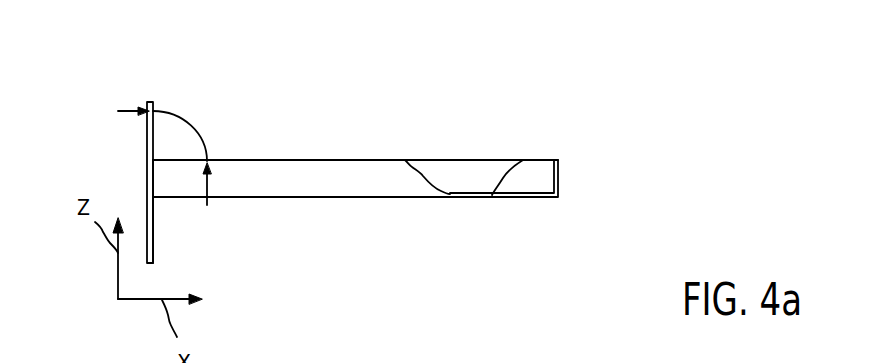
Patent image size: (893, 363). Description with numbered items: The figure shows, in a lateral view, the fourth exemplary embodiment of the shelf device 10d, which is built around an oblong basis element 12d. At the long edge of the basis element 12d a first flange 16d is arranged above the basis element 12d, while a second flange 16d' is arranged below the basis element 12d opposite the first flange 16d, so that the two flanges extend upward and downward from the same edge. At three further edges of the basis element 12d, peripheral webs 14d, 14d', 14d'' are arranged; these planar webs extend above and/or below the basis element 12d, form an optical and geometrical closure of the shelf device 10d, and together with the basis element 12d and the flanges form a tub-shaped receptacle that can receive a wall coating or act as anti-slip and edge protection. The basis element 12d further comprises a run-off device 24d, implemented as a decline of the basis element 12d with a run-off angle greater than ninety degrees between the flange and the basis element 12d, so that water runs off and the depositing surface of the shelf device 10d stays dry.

The shelf device 10d is at (122, 62).
The first flange 16d is at (96, 170).
The second flange 16d' is at (209, 243).
The run-off device 24d is at (237, 160).
The peripheral web 14d is at (410, 177).
The peripheral web 14d' is at (463, 133).
The peripheral web 14d'' is at (355, 221).
The basis element 12d is at (523, 160).